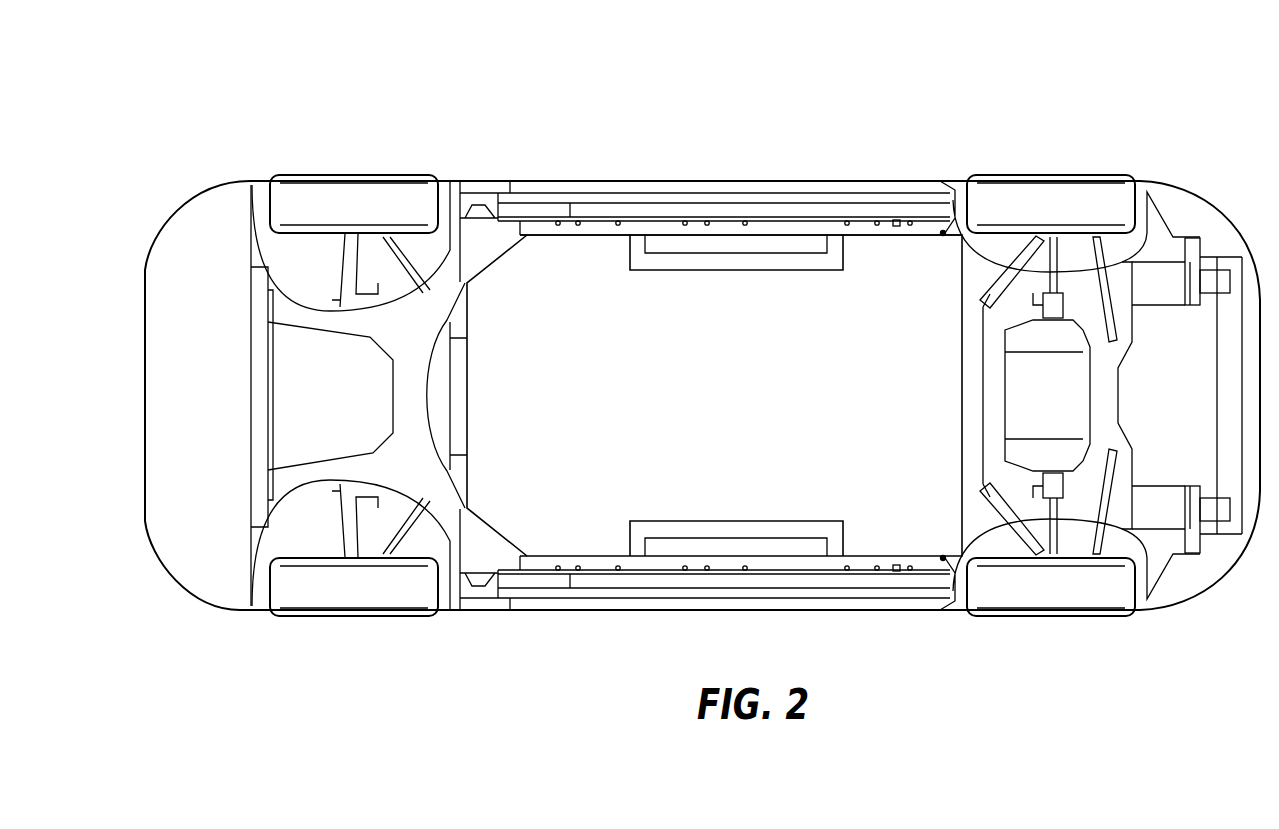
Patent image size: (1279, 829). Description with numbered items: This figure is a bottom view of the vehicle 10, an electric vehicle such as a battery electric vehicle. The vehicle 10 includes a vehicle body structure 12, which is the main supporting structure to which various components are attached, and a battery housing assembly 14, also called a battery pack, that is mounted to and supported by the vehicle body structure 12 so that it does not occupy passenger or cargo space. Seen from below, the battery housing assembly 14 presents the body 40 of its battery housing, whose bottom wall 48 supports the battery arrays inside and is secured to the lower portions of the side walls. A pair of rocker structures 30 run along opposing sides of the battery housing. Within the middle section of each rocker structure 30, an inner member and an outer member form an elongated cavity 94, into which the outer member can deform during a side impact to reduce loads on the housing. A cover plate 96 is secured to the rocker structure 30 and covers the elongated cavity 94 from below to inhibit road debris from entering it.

The vehicle 10 is at (365, 140).
The vehicle body structure 12 is at (238, 612).
The battery housing assembly 14 is at (540, 500).
The rocker structure 30 is at (833, 233).
The body 40 is at (510, 233).
The bottom wall 48 is at (570, 283).
The elongated cavity 94 is at (752, 245).
The cover plate 96 is at (675, 247).